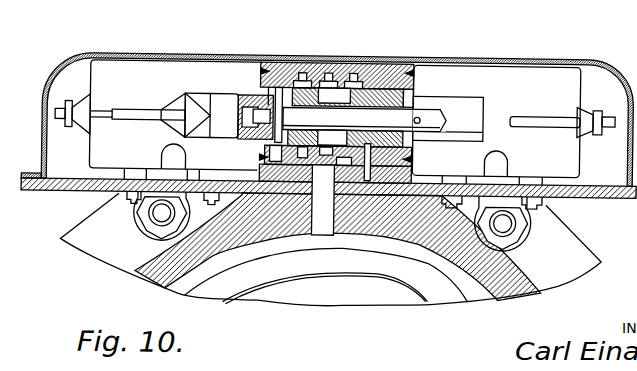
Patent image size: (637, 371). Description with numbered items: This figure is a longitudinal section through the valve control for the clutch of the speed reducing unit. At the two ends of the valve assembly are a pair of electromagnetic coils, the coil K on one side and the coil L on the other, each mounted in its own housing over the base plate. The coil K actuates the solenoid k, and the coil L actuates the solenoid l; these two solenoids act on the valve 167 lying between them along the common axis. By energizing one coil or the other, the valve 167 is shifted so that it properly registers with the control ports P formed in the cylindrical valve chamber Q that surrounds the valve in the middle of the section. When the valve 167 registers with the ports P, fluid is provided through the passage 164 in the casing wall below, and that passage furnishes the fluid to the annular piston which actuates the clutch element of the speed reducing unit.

The coil K is at (175, 77).
The solenoid k is at (218, 104).
The control ports P is at (348, 73).
The cylindrical valve chamber Q is at (370, 76).
The coil L is at (535, 72).
The solenoid l is at (462, 105).
The valve 167 is at (396, 137).
The passage 164 is at (325, 220).